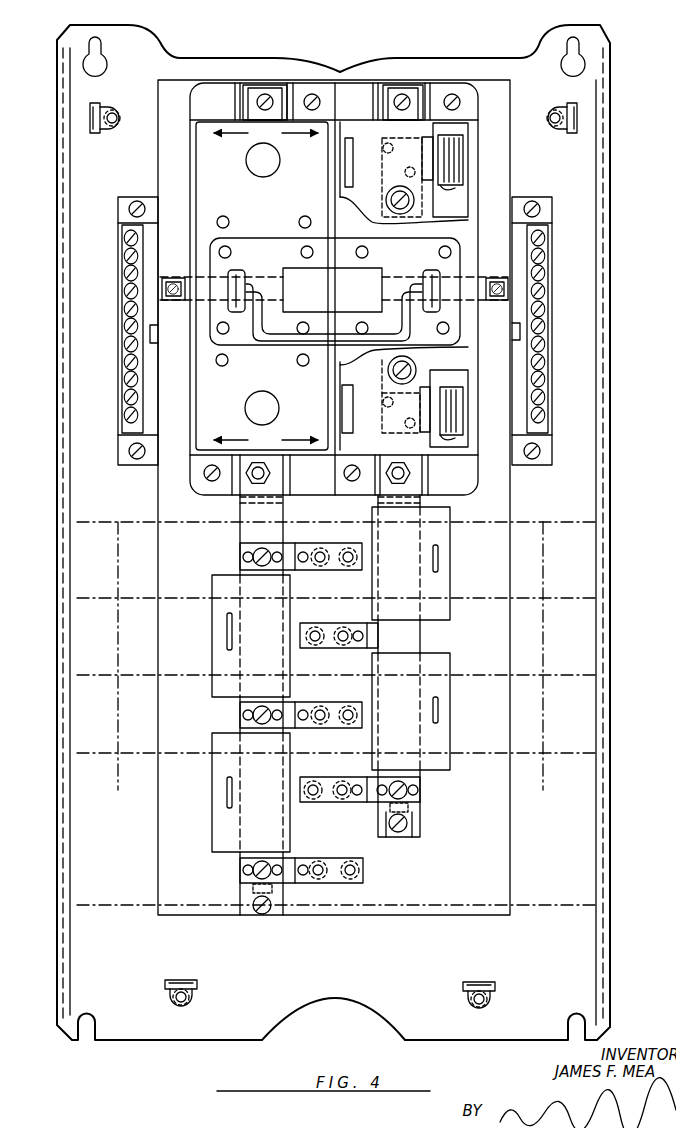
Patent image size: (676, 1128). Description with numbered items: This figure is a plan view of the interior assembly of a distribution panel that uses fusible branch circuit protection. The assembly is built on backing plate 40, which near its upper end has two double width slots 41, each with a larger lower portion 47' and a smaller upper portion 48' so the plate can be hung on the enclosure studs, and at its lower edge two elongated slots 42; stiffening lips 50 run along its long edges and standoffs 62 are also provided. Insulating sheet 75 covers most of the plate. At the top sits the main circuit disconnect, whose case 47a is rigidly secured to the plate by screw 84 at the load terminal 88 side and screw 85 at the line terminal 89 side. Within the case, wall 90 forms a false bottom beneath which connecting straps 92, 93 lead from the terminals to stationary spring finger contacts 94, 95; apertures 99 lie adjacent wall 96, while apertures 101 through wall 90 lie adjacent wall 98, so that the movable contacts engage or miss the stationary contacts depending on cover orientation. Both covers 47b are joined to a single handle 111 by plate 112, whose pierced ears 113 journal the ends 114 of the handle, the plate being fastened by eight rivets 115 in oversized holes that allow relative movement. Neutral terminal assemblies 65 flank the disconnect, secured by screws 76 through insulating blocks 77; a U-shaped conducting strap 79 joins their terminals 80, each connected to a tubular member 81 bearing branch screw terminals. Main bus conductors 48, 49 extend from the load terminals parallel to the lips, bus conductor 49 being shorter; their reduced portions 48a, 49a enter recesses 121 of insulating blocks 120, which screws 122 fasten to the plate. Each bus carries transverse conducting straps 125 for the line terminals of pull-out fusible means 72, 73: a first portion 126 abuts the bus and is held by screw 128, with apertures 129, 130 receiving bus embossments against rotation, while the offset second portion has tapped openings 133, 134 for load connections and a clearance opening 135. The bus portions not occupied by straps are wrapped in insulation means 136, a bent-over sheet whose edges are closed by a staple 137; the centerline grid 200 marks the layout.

The backing plate 40 is at (276, 56).
The double width slots 41 is at (108, 52).
The elongated slots 42 is at (88, 1043).
The lower portions of slots 47' is at (330, 80).
The case 47a is at (460, 497).
The covers 47b is at (470, 232).
The main bus conductor 48 is at (301, 547).
The upper portions of slots 48' is at (362, 40).
The reduced portion 48a is at (240, 877).
The main bus conductor 49 is at (421, 775).
The reduced portion 49a is at (423, 795).
The stiffening lips 50 is at (334, 836).
The standoffs 62 is at (94, 134).
The neutral terminal assemblies 65 is at (117, 333).
The pull-out type fusible means 72 is at (129, 908).
The pull-out type fusible means 73 is at (552, 909).
The insulating sheet 75 is at (157, 623).
The screws 76 is at (139, 464).
The insulating blocks 77 is at (118, 453).
The U-shaped conducting strap 79 is at (193, 278).
The terminals 80 is at (499, 276).
The tubular member 81 is at (128, 289).
The screw 84 is at (402, 88).
The screw 85 is at (316, 92).
The load terminal 88 is at (238, 497).
The line terminal 89 is at (290, 88).
The wall 90 is at (455, 355).
The connecting strap 92 is at (383, 361).
The connecting strap 93 is at (382, 172).
The stationary spring finger contact 94 is at (462, 408).
The stationary spring finger contact 95 is at (464, 152).
The wall of case 96 is at (478, 130).
The wall of case 98 is at (345, 131).
The apertures 99 is at (458, 187).
The apertures 101 is at (346, 408).
The handle 111 is at (287, 351).
The plate 112 is at (271, 237).
The pierced ears 113 is at (246, 274).
The handle ends 114 is at (238, 290).
The rivets 115 is at (232, 252).
The insulating blocks 120 is at (420, 826).
The recesses 121 is at (423, 810).
The screws 122 is at (400, 834).
The conducting straps 125 is at (339, 568).
The first strap portion 126 is at (240, 720).
The screw 128 is at (270, 538).
The aperture 129 is at (277, 563).
The aperture 130 is at (243, 557).
The tapped opening 133 is at (320, 725).
The tapped opening 134 is at (348, 724).
The clearance opening 135 is at (301, 710).
The insulation means 136 is at (450, 558).
The staple 137 is at (442, 549).
The mounting grid lines 200 is at (537, 519).